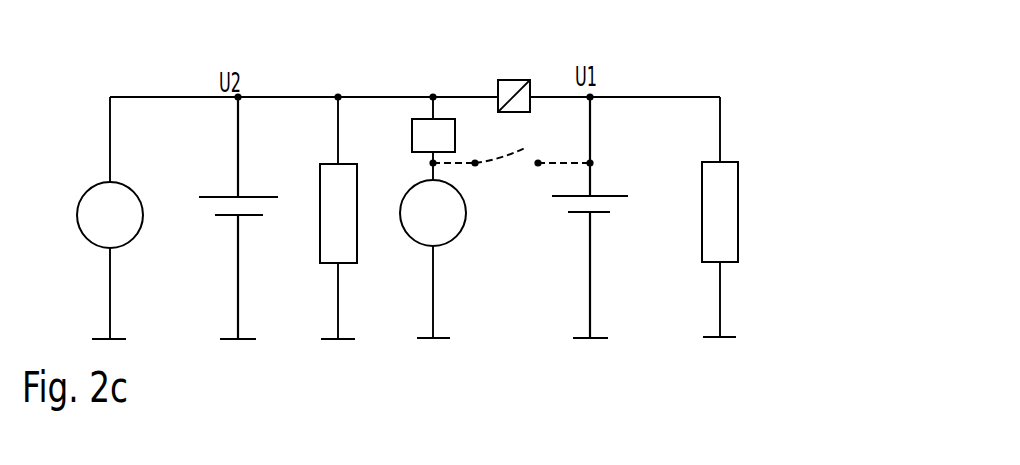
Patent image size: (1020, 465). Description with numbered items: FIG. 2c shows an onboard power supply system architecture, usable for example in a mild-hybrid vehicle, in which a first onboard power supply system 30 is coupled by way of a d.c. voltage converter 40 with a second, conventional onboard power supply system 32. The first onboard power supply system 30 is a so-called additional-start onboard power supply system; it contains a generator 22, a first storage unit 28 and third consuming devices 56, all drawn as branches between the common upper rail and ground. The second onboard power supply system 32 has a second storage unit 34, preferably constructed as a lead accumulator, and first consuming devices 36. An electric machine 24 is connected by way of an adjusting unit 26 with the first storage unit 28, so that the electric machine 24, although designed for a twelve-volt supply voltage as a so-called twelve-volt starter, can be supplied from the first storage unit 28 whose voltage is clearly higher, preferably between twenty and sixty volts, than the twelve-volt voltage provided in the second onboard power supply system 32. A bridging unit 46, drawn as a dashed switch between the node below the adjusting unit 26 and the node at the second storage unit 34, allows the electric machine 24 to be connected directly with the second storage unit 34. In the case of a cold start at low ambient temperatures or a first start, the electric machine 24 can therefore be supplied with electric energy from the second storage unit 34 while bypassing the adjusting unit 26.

The generator 22 is at (128, 242).
The electric machine 24 is at (452, 241).
The adjusting unit 26 is at (412, 137).
The first storage unit 28 is at (258, 215).
The first onboard power supply system 30 is at (188, 72).
The second onboard power supply system 32 is at (687, 68).
The second storage unit 34 is at (602, 213).
The first consuming devices 36 is at (738, 213).
The d.c. voltage converter 40 is at (512, 80).
The bridging unit 46 is at (507, 174).
The third consuming devices 56 is at (320, 173).